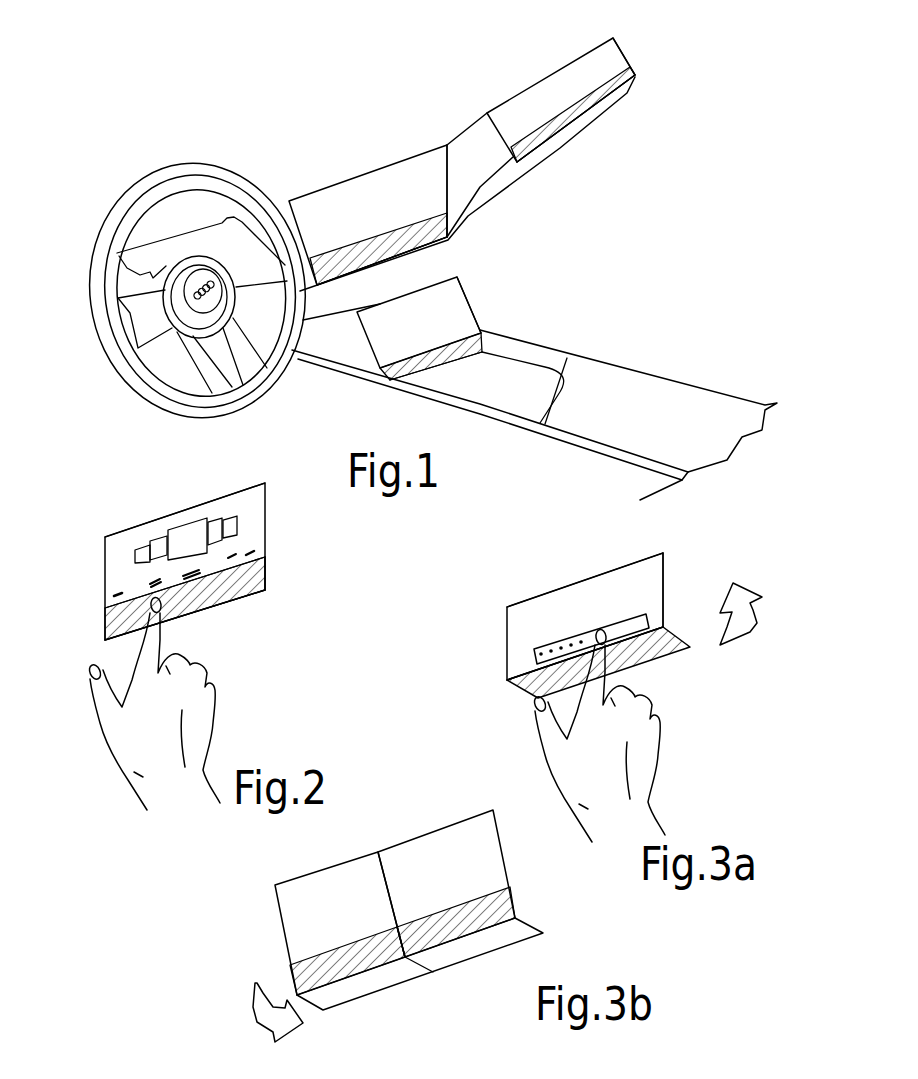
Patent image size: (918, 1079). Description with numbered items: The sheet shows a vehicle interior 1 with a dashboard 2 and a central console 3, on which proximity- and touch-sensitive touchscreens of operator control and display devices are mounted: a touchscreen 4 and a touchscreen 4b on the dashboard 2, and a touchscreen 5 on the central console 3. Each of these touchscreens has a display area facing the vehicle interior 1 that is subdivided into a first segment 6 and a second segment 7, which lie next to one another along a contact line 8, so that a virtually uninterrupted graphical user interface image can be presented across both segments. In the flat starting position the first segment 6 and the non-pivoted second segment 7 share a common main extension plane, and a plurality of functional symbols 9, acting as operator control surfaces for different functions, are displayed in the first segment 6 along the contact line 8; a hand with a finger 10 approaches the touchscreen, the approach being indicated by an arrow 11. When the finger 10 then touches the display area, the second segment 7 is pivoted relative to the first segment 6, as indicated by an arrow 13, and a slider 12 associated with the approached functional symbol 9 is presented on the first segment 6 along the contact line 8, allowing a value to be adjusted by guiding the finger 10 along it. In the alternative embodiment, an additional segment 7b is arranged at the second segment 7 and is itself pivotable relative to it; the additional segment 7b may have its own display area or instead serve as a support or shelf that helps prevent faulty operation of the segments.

In FIG. 1, the vehicle interior 1 is at (573, 264).
In FIG. 1, the dashboard 2 is at (289, 201).
In FIG. 1, the central console 3 is at (625, 372).
In FIG. 1, the touchscreen 4 is at (342, 182).
In FIG. 2, the touchscreen 4 is at (234, 490).
In FIG. 3A, the touchscreen 4 is at (620, 566).
In FIG. 1, the touchscreen 4b is at (523, 87).
In FIG. 1, the touchscreen 5 is at (459, 277).
In FIG. 2, the touchscreen 5 is at (186, 539).
In FIG. 3A, the touchscreen 5 is at (585, 580).
In FIG. 1, the first segment 6 is at (418, 173).
In FIG. 2, the first segment 6 is at (114, 530).
In FIG. 3A, the first segment 6 is at (538, 612).
In FIG. 3B, the first segment 6 is at (297, 915).
In FIG. 1, the second segment 7 is at (425, 228).
In FIG. 2, the second segment 7 is at (258, 595).
In FIG. 3A, the second segment 7 is at (677, 657).
In FIG. 3B, the second segment 7 is at (503, 907).
In FIG. 3B, the additional segment 7b is at (374, 984).
In FIG. 1, the contact line 8 is at (382, 232).
In FIG. 2, the contact line 8 is at (227, 596).
In FIG. 3A, the contact line 8 is at (664, 620).
In FIG. 2, the functional symbol 9 is at (116, 588).
In FIG. 2, the finger 10 is at (160, 642).
In FIG. 3A, the finger 10 is at (596, 680).
In FIG. 2, the arrow 11 is at (106, 617).
In FIG. 3A, the slider 12 is at (534, 654).
In FIG. 3A, the arrow 13 is at (743, 640).